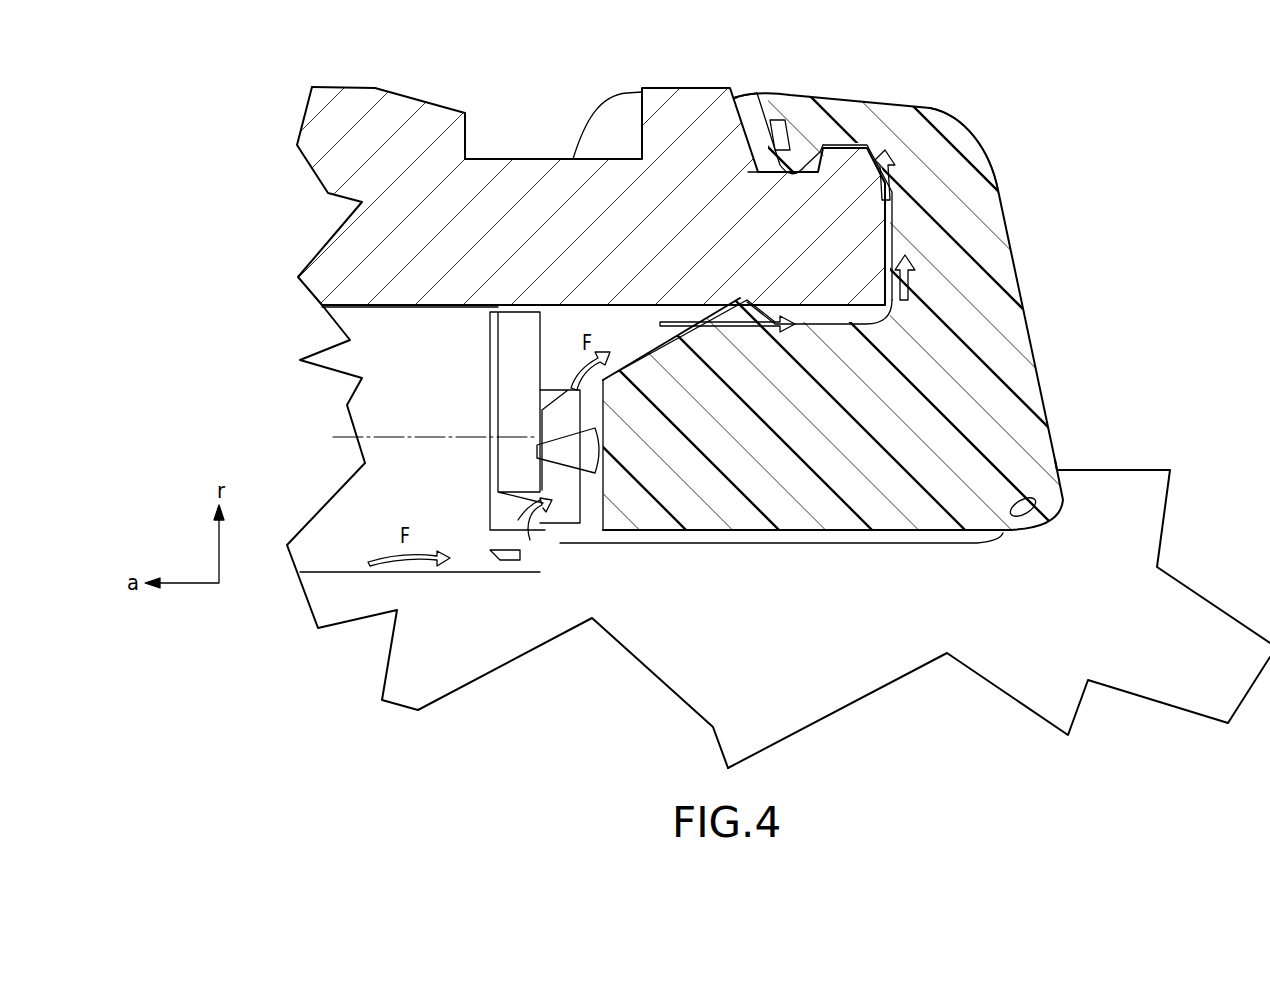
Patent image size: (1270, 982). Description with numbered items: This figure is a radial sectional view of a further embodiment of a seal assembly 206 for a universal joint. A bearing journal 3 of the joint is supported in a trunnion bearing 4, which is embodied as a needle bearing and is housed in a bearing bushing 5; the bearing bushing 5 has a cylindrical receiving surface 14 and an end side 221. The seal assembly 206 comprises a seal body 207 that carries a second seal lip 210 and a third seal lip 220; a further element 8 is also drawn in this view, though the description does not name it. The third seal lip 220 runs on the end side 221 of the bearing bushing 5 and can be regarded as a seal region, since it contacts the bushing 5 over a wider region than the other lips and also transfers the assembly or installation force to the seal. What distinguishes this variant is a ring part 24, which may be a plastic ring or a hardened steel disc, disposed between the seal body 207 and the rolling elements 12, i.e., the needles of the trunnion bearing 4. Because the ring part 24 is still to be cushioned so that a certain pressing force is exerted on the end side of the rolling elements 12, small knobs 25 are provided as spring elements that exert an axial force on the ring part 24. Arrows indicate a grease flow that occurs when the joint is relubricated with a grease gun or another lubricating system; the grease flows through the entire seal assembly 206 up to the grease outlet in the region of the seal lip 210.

The bearing journal 3 is at (805, 688).
The trunnion bearing 4 is at (300, 427).
The bearing bushing 5 is at (385, 115).
The fastening element 8 is at (733, 303).
The rolling elements 12 is at (392, 357).
The cylindrical receiving surface 14 is at (570, 307).
The ring part 24 is at (522, 340).
The knobs 25 is at (565, 452).
The seal assembly 206 is at (1055, 163).
The seal body 207 is at (968, 176).
The second seal lip 210 is at (795, 172).
The third seal lip 220 is at (888, 240).
The end side 221 is at (887, 247).